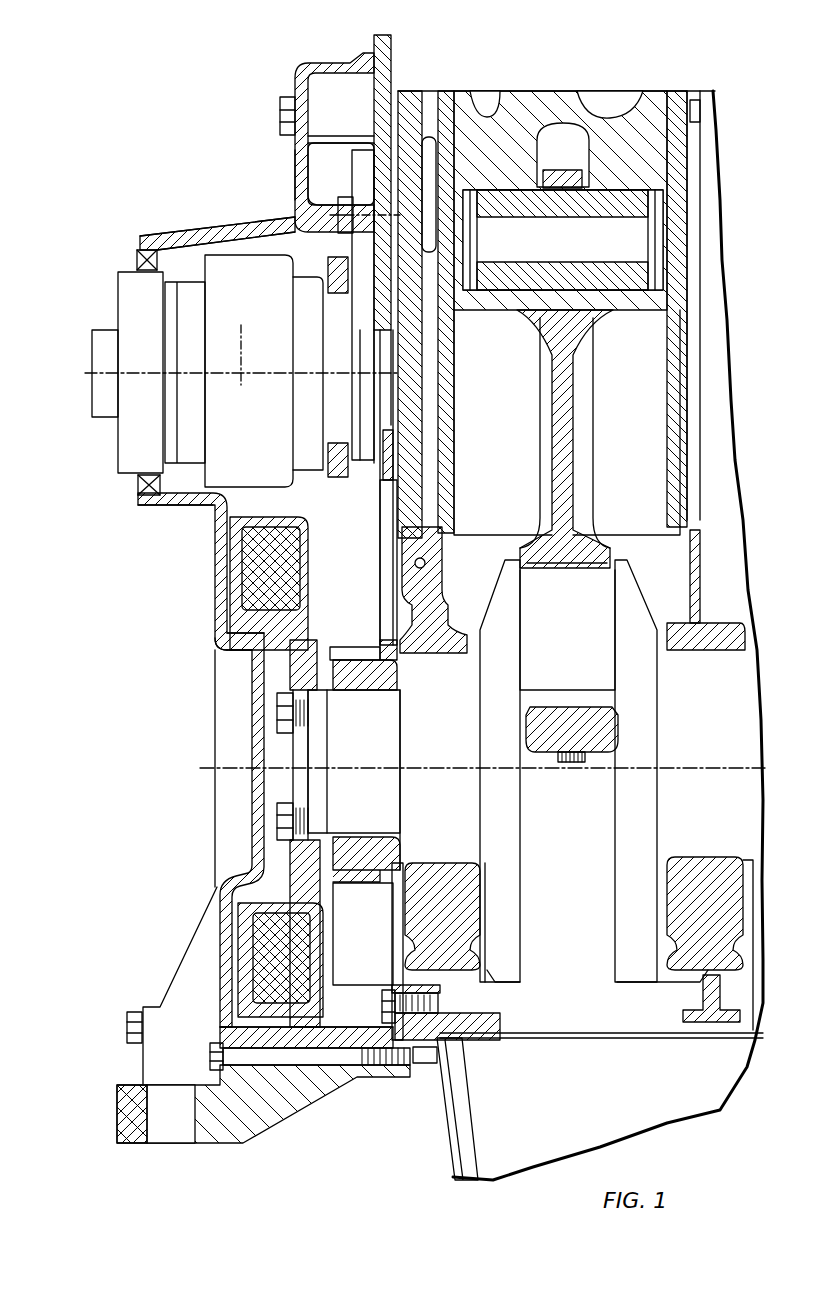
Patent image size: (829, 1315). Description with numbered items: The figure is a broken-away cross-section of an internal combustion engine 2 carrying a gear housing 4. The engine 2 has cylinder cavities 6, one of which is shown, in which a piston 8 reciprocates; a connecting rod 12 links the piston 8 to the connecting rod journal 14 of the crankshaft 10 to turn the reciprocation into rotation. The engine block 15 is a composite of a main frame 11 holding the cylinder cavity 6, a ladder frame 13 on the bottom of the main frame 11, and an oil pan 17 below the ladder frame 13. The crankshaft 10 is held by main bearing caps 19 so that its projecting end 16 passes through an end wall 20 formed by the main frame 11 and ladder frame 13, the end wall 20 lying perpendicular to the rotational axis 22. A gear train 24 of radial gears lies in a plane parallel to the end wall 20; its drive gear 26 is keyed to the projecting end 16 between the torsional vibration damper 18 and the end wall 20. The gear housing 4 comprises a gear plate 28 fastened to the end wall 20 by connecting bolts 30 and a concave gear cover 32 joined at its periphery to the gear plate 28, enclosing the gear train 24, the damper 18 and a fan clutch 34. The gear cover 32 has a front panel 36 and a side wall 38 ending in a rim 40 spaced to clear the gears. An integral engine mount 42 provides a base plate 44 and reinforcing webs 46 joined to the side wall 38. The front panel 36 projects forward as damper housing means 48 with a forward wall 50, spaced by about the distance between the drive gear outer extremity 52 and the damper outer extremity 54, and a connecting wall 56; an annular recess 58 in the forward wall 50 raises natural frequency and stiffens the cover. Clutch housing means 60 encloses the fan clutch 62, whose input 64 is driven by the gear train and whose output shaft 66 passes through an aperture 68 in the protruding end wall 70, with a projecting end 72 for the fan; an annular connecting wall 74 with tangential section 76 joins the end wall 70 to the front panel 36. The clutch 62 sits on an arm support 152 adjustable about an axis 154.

The internal combustion engine 2 is at (340, 52).
The gear housing 4 is at (130, 228).
The cylinder cavity 6 is at (503, 427).
The piston 8 is at (505, 175).
The crankshaft 10 is at (472, 652).
The main frame 11 is at (428, 362).
The connecting rod 12 is at (576, 413).
The ladder frame 13 is at (477, 1020).
The connecting rod journal 14 is at (632, 598).
The engine block 15 is at (423, 90).
The projecting end of the crankshaft 16 is at (375, 824).
The oil pan 17 is at (460, 1085).
The torsional vibration damper 18 is at (300, 878).
The main bearing caps 19 is at (413, 915).
The end wall 20 is at (395, 520).
The rotational axis 22 is at (345, 768).
The gear train 24 is at (363, 636).
The drive gear 26 is at (343, 672).
The gear plate 28 is at (380, 133).
The connecting bolts 30 is at (382, 1002).
The gear cover 32 is at (292, 170).
The fan clutch 34 is at (277, 468).
The front panel 36 is at (300, 148).
The side wall 38 is at (342, 181).
The rim 40 is at (362, 52).
The engine mount 42 is at (102, 1078).
The base plate 44 is at (132, 1137).
The reinforcing webs 46 is at (177, 993).
The damper housing means 48 is at (211, 610).
The forward wall 50 is at (212, 628).
The outer extremity of the drive gear 52 is at (330, 650).
The outer extremity of the vibration damper 54 is at (210, 650).
The connecting wall 56 is at (290, 792).
The annular recess 58 is at (233, 753).
The clutch housing means 60 is at (175, 232).
The fan clutch 62 is at (249, 371).
The input 64 is at (332, 312).
The output shaft 66 is at (108, 410).
The aperture 68 is at (140, 483).
The protruding end wall 70 is at (136, 246).
The projecting end 72 is at (92, 360).
The annular connecting wall 74 is at (234, 232).
The tangential section 76 is at (226, 553).
The arm support 152 is at (364, 397).
The axis 154 is at (336, 205).